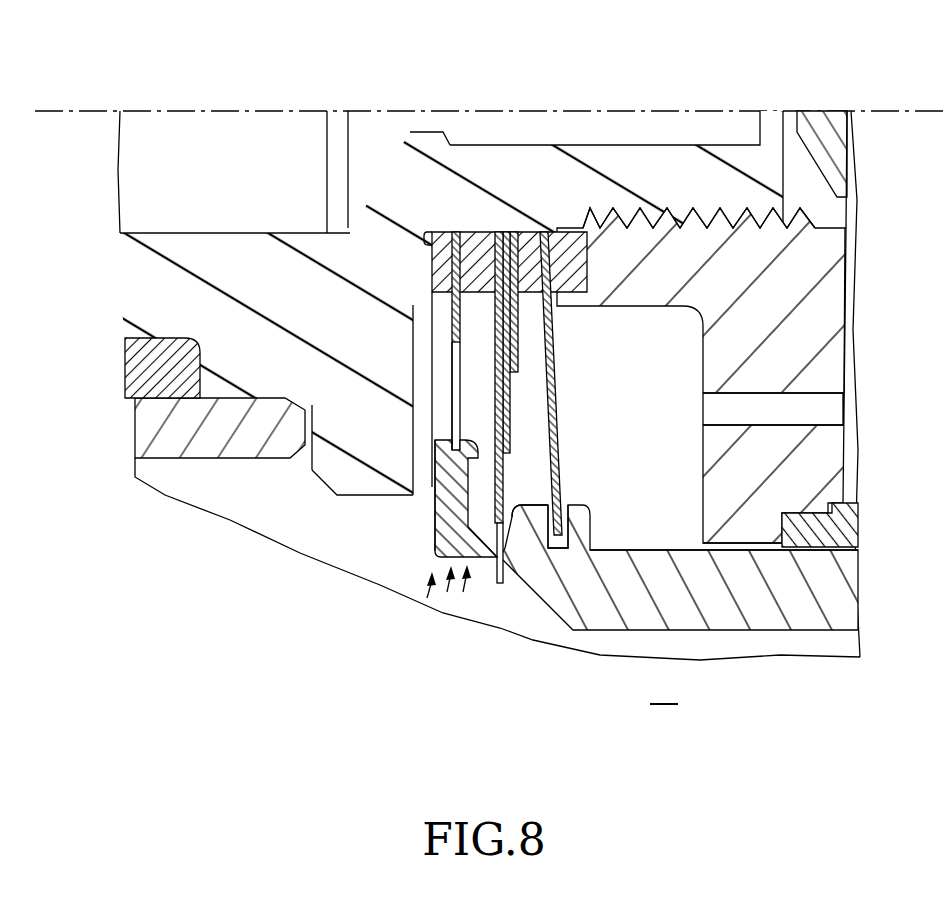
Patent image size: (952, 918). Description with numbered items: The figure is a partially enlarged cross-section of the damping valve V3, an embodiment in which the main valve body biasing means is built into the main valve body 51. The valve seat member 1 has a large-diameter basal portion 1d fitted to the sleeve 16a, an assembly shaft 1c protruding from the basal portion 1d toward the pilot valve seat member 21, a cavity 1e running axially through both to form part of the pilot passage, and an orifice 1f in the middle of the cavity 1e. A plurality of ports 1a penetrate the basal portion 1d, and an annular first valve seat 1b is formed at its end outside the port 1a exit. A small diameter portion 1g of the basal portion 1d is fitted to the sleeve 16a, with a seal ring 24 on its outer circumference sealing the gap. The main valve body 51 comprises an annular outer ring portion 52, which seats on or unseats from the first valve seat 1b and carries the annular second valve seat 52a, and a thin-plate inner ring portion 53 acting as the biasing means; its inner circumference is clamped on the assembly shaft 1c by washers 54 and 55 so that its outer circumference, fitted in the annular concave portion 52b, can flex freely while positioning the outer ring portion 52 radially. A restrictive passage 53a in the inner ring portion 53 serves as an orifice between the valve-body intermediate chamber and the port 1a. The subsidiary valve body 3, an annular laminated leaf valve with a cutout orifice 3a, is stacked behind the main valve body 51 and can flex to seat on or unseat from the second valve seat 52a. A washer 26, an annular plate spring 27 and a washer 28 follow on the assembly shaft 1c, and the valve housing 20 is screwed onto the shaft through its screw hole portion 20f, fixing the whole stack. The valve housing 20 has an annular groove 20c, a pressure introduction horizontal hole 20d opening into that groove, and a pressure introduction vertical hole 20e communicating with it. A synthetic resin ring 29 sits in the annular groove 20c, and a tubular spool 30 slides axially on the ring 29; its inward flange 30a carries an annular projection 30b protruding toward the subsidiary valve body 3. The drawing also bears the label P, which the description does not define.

The valve seat member 1 is at (292, 542).
The port 1a is at (182, 250).
The first valve seat 1b is at (426, 500).
The assembly shaft 1c is at (734, 160).
The basal portion 1d is at (307, 492).
The cavity 1e is at (546, 140).
The orifice 1f is at (413, 130).
The small diameter portion 1g is at (217, 400).
The subsidiary valve body 3 is at (507, 478).
The cutout orifice 3a is at (556, 553).
The sleeve 16a is at (170, 428).
The valve housing 20 is at (757, 548).
The annular groove 20c is at (797, 550).
The pressure introduction horizontal hole 20d is at (850, 353).
The pressure introduction vertical hole 20e is at (795, 412).
The screw hole portion 20f is at (693, 205).
The pilot valve seat member 21 is at (837, 162).
The seal ring 24 is at (140, 364).
The washer 26 is at (512, 230).
The annular plate spring 27 is at (550, 232).
The washer 28 is at (550, 362).
The synthetic resin ring 29 is at (840, 532).
The tubular spool 30 is at (718, 634).
The flange 30a is at (658, 510).
The annular projection 30b is at (513, 522).
The main valve body 51 is at (466, 578).
The outer ring portion 52 is at (488, 560).
The second valve seat 52a is at (470, 562).
The annular concave portion 52b is at (437, 560).
The inner ring portion 53 is at (470, 297).
The restrictive passage 53a is at (447, 368).
The washer 54 is at (438, 205).
The washer 55 is at (457, 230).
The pressure P is at (661, 552).
The damping valve V3 is at (448, 578).